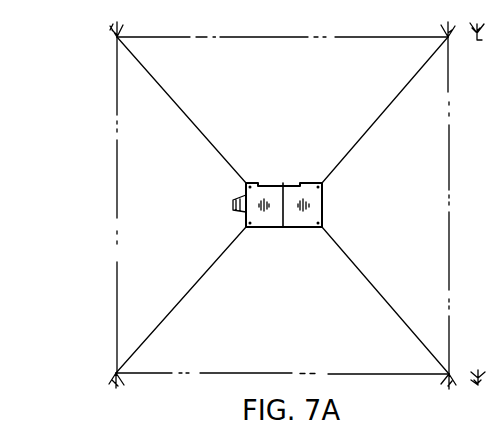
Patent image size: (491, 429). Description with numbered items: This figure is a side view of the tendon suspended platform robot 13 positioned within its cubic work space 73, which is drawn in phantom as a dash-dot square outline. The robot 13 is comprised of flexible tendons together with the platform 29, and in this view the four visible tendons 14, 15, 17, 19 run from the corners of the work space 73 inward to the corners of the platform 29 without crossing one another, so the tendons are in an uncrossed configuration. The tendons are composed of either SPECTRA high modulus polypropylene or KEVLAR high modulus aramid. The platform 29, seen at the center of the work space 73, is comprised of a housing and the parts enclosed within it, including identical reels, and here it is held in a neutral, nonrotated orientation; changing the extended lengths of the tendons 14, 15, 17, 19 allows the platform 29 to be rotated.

The tendon suspended platform robot 13 is at (247, 196).
The flexible tendon 14 is at (386, 108).
The flexible tendon 15 is at (385, 299).
The flexible tendon 17 is at (167, 316).
The flexible tendon 19 is at (160, 82).
The platform 29 is at (262, 183).
The cubic work space 73 is at (236, 36).